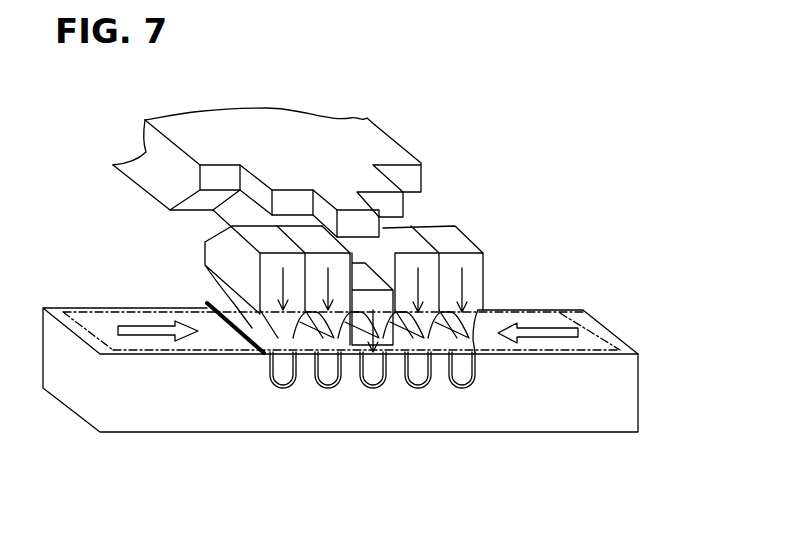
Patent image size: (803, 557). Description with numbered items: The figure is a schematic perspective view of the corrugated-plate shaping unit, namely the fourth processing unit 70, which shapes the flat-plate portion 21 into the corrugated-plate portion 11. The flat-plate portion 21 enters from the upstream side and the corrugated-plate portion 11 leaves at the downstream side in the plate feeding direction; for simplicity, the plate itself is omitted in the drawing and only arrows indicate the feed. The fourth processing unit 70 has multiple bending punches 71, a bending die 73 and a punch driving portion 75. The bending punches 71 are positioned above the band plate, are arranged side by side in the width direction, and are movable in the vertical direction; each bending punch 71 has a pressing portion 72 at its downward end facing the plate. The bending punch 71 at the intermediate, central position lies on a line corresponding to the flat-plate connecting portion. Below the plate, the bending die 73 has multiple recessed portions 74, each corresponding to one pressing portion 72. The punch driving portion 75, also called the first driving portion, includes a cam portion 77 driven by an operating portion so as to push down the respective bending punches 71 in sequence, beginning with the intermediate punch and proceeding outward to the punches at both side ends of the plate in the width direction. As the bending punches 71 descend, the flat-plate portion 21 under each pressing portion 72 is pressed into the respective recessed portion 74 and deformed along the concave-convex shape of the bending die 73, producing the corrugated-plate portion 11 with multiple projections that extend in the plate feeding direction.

The fourth processing unit 70 is at (494, 220).
The bending punch 71 is at (262, 232).
The pressing portion 72 is at (295, 390).
The bending die 73 is at (640, 378).
The recessed portion 74 is at (253, 372).
The punch driving portion 75 is at (376, 121).
The cam portion 77 is at (183, 132).
The corrugated-plate portion 11 is at (210, 307).
The flat-plate portion 21 is at (562, 312).